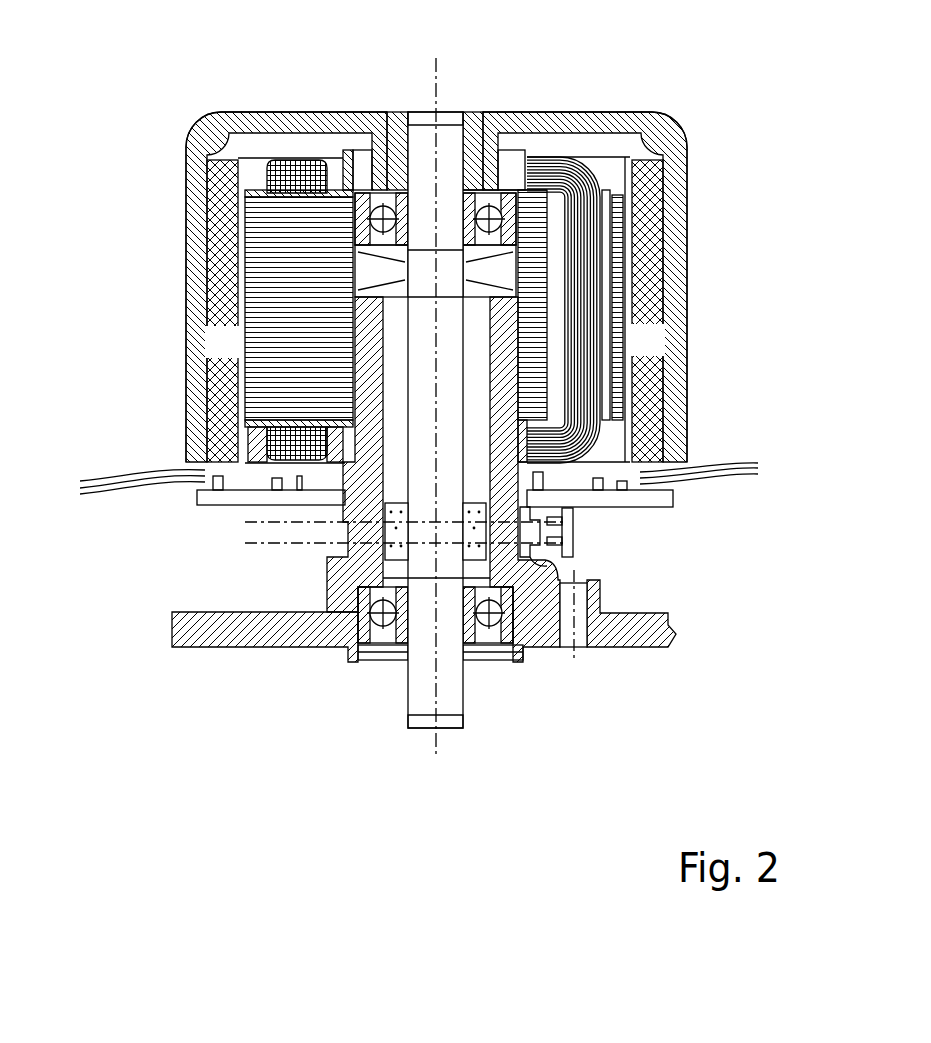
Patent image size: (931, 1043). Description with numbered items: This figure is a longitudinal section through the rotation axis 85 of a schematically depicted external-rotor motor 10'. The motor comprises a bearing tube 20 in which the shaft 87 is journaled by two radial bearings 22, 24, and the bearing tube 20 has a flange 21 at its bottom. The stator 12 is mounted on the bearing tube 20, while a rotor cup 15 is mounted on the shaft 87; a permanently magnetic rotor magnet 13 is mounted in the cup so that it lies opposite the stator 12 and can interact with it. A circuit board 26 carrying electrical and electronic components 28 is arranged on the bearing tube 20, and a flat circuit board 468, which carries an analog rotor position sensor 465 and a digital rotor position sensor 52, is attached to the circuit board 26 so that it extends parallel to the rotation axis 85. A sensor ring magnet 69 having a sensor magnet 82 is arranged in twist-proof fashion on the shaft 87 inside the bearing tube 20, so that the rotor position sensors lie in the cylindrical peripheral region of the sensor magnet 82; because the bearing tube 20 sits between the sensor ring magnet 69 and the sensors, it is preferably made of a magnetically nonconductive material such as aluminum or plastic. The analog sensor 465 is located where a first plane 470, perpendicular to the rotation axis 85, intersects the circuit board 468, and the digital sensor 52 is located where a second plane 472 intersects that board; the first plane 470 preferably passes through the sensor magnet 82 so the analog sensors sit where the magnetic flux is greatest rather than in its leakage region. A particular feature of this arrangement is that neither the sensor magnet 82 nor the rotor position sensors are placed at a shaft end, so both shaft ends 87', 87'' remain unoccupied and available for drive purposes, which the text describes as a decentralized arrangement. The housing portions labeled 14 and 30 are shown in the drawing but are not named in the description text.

The external-rotor motor 10' is at (381, 234).
The stator 12 is at (275, 335).
The rotor magnet 13 is at (210, 283).
The rotor housing 14 is at (645, 103).
The rotor cup 15 is at (233, 112).
The bearing tube 20 is at (363, 322).
The radial bearing 22 is at (498, 193).
The radial bearing 24 is at (357, 632).
The flange 21 is at (672, 622).
The circuit board 26 is at (673, 500).
The electrical and electronic components 28 is at (417, 480).
The mounting bore 30 is at (598, 580).
The digital rotor position sensor 52 is at (547, 563).
The sensor ring magnet 69 is at (395, 478).
The sensor magnet 82 is at (463, 503).
The rotation axis 85 is at (437, 66).
The shaft 87 is at (454, 378).
The shaft end 87' is at (410, 77).
The shaft end 87'' is at (483, 740).
The analog rotor position sensor 465 is at (573, 540).
The circuit board 468 is at (573, 518).
The first plane 470 is at (245, 522).
The second plane 472 is at (245, 543).